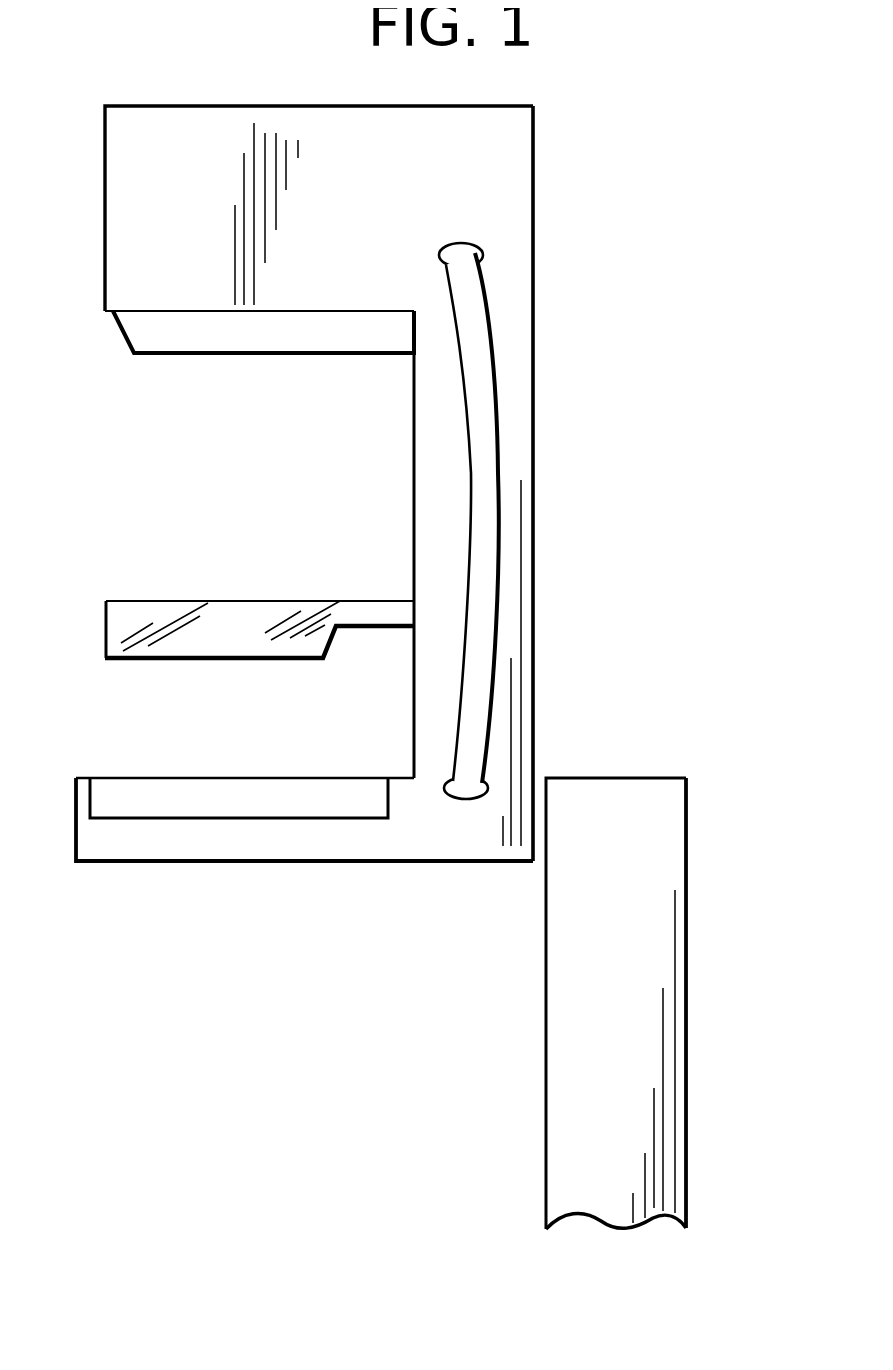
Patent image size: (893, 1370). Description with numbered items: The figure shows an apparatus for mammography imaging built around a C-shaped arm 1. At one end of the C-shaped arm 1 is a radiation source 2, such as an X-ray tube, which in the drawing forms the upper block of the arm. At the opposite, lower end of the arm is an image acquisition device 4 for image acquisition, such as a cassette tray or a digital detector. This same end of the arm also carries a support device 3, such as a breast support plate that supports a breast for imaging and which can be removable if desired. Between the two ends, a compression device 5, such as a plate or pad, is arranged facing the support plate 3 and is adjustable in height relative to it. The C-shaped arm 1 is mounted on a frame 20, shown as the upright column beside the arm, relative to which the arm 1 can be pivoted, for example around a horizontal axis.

The C-shaped arm 1 is at (556, 410).
The radiation source 2 is at (193, 320).
The support device 3 is at (260, 843).
The image acquisition device 4 is at (117, 787).
The compression device 5 is at (225, 618).
The frame 20 is at (645, 858).